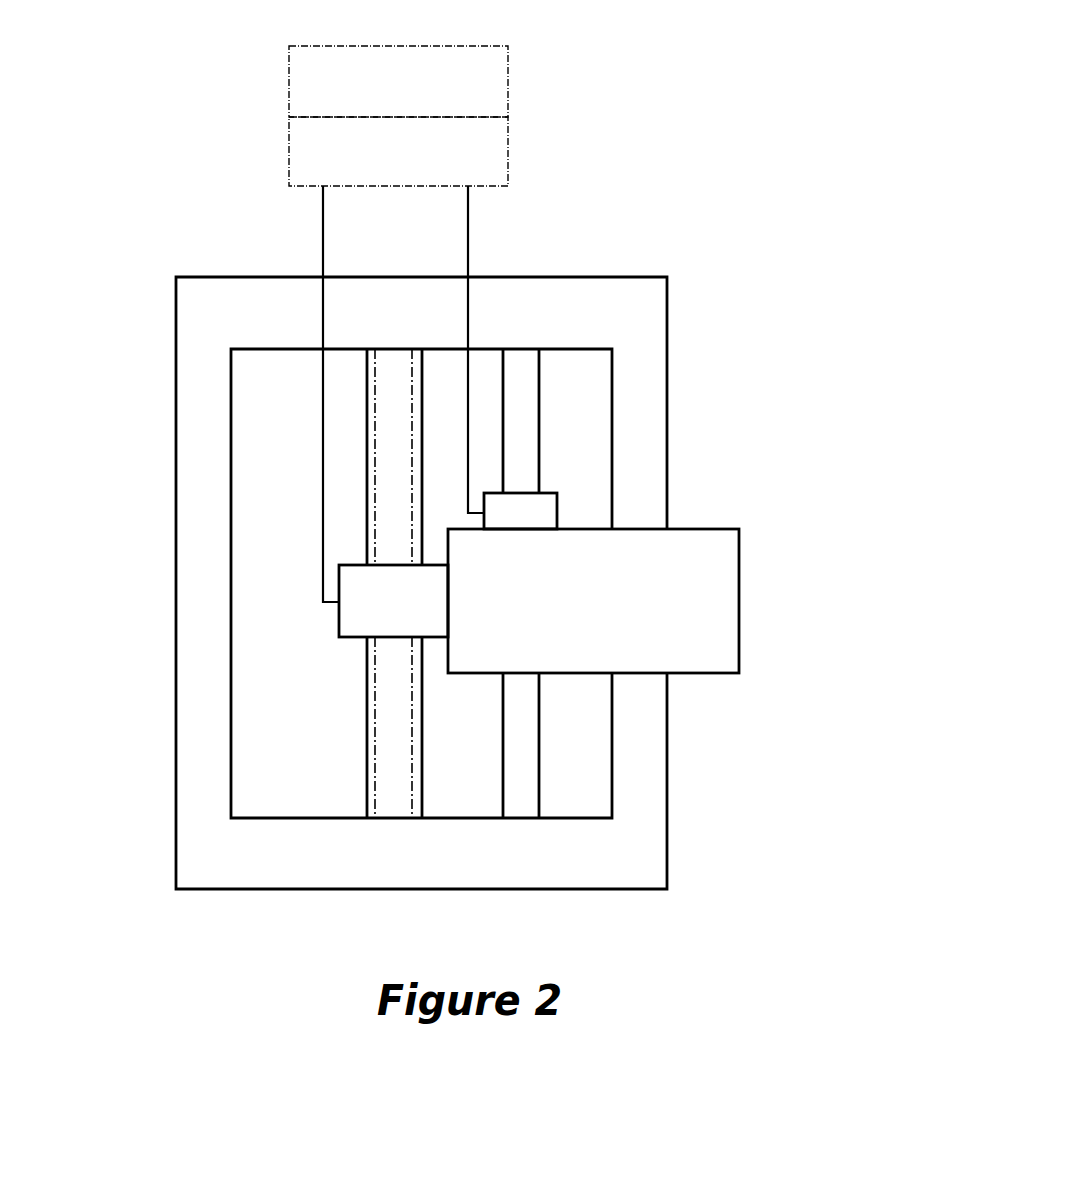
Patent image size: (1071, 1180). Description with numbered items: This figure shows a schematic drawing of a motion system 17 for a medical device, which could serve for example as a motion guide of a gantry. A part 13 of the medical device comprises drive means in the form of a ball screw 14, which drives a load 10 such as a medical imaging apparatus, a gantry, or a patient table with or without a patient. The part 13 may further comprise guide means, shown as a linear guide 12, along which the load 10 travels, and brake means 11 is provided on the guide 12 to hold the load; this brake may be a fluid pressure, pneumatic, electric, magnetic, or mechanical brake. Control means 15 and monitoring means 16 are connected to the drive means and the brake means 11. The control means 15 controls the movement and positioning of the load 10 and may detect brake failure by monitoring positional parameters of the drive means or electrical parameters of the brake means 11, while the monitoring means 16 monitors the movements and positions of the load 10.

The load 10 is at (670, 615).
The brake means 11 is at (540, 512).
The linear guide 12 is at (525, 407).
The part of the medical device 13 is at (522, 312).
The ball screw 14 is at (392, 710).
The control means 15 is at (468, 173).
The monitoring means 16 is at (472, 82).
The motion system 17 is at (175, 210).